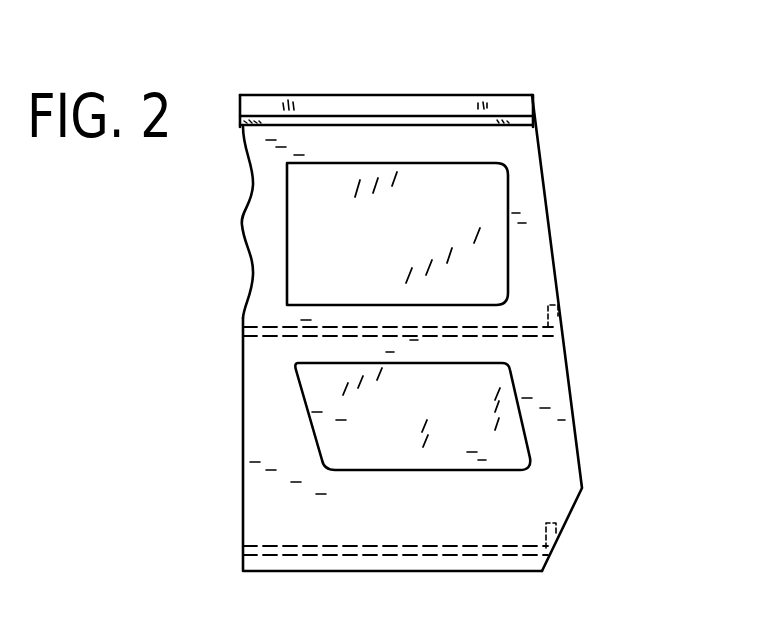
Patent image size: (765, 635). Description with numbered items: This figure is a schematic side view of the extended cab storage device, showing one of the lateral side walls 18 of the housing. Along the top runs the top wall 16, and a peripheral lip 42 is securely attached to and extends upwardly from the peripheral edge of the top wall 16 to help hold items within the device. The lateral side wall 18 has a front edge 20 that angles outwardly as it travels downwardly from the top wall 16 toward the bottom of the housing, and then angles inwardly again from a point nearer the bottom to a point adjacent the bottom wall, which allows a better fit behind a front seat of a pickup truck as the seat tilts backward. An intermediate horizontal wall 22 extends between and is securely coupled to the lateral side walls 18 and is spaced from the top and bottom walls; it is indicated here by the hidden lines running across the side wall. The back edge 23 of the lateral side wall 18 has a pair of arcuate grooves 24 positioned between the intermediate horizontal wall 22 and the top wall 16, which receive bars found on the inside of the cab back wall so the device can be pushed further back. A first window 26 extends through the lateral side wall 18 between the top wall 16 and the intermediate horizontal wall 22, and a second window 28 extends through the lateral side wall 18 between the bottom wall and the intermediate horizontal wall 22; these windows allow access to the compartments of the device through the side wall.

The top wall 16 is at (534, 122).
The lateral side wall 18 is at (537, 498).
The front edge 20 is at (553, 282).
The intermediate horizontal wall 22 is at (515, 336).
The back edge 23 is at (262, 386).
The arcuate grooves 24 is at (250, 246).
The first window 26 is at (509, 163).
The second window 28 is at (308, 415).
The peripheral lip 42 is at (457, 95).